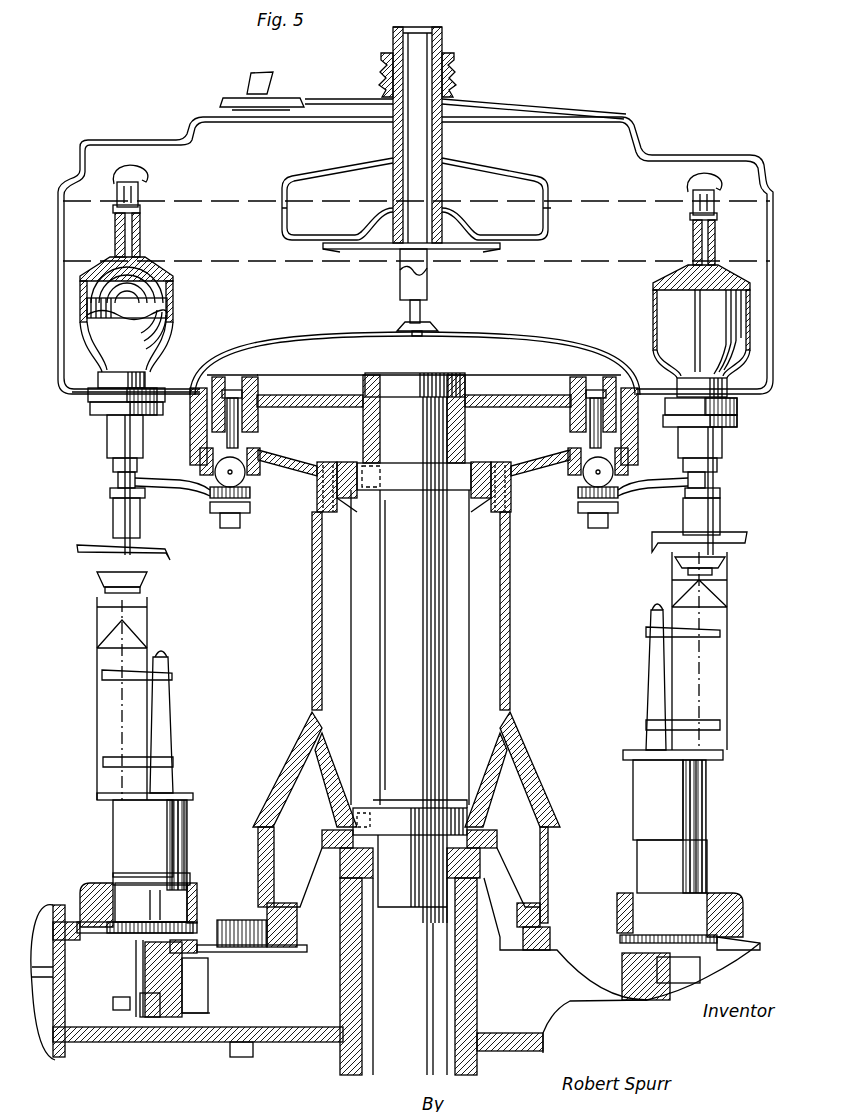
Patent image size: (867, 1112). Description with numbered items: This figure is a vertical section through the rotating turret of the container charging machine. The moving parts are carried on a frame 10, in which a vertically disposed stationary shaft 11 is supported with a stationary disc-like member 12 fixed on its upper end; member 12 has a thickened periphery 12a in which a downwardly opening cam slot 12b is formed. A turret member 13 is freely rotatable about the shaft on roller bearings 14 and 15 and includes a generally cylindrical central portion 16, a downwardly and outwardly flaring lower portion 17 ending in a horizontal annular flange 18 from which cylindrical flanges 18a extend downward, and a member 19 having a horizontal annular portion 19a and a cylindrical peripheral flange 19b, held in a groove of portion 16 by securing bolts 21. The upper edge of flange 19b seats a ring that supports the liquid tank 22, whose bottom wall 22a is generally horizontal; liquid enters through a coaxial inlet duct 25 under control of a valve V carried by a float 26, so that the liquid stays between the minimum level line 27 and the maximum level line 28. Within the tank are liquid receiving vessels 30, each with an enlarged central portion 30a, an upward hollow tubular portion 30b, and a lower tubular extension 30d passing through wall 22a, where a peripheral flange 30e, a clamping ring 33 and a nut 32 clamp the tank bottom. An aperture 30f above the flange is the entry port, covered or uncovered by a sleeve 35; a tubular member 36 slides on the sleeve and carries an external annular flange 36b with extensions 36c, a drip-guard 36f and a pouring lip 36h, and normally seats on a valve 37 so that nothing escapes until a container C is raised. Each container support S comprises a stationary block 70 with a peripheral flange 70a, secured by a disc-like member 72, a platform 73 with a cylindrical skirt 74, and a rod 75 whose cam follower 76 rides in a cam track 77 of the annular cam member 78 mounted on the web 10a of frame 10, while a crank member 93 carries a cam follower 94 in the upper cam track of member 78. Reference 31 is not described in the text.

The frame 10 is at (62, 1010).
The horizontally extending web 10a is at (208, 1035).
The stationary shaft 11 is at (383, 628).
The stationary disc-like member 12 is at (498, 392).
The thickened periphery 12a is at (218, 372).
The downwardly opening slot 12b is at (259, 421).
The turret member 13 is at (523, 722).
The roller bearing 14 is at (382, 822).
The roller bearing 15 is at (390, 478).
The cylindrical central portion 16 is at (312, 610).
The flaring lower portion 17 is at (558, 877).
The horizontal annular flange 18 is at (86, 886).
The cylindrical flange 18a is at (180, 893).
The member 19 is at (492, 466).
The horizontal annular portion 19a is at (540, 470).
The cylindrical peripheral flange 19b is at (642, 451).
The securing bolts 21 is at (340, 455).
The liquid tank 22 is at (775, 216).
The bottom wall 22a is at (176, 388).
The liquid inlet duct 25 is at (443, 52).
The float 26 is at (550, 197).
The minimum liquid level line 27 is at (582, 262).
The maximum liquid level line 28 is at (264, 201).
The liquid receiving vessel 30 is at (190, 288).
The enlarged central portion 30a is at (160, 312).
The hollow tubular portion 30b is at (118, 240).
The tubular extension 30d is at (88, 392).
The peripheral flange 30e is at (695, 396).
The aperture 30f is at (130, 370).
The hook 31 is at (129, 165).
The nut 32 is at (107, 420).
The clamping ring 33 is at (110, 415).
The sleeve 35 is at (112, 510).
The tubular member 36 is at (140, 541).
The external annular flange 36b is at (150, 582).
The extensions 36c is at (110, 590).
The drip-guard 36f is at (100, 558).
The pouring lip 36h is at (172, 552).
The valve 37 is at (135, 590).
The stationary block 70 is at (130, 888).
The peripheral flange 70a is at (170, 880).
The disc-like member 72 is at (192, 925).
The disc-like element 73 is at (97, 797).
The cylindrical skirt 74 is at (188, 832).
The rod 75 is at (128, 975).
The cam follower 76 is at (150, 1030).
The cam track 77 is at (158, 1043).
The annular cam member 78 is at (182, 987).
The crank member 93 is at (160, 958).
The cam follower 94 is at (175, 955).
The container C is at (97, 657).
The container support S is at (105, 820).
The valve V is at (432, 252).